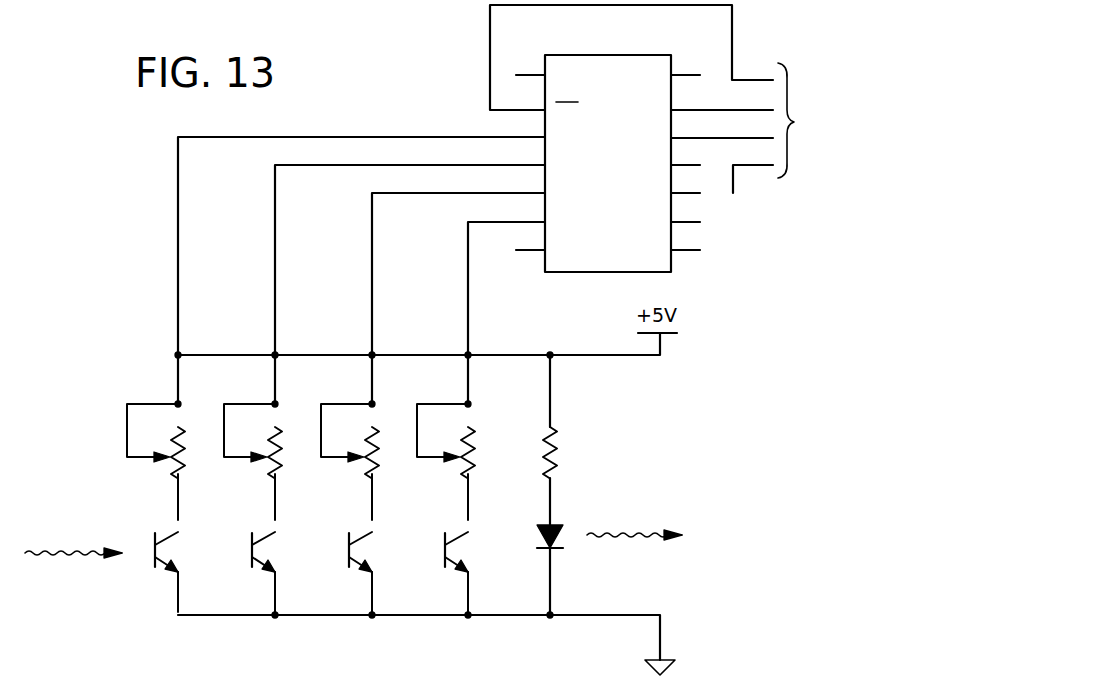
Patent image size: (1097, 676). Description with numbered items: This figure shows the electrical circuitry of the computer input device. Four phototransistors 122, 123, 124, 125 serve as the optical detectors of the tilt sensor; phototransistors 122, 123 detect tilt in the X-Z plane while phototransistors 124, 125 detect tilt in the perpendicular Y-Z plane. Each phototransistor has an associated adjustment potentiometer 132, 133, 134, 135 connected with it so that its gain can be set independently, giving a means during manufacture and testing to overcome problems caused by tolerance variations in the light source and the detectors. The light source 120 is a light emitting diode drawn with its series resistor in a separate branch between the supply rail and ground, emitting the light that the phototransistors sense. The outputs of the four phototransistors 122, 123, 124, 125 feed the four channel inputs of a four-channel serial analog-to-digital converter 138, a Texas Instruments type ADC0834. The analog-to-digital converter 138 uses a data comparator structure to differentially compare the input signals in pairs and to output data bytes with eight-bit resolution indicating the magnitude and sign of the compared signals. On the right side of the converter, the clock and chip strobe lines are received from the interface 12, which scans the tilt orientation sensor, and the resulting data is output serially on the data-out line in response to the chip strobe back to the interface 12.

The analog-to-digital converter 138 is at (615, 272).
The interface 12 is at (840, 120).
The adjustment potentiometer 132 is at (162, 468).
The adjustment potentiometer 133 is at (259, 468).
The adjustment potentiometer 134 is at (356, 468).
The adjustment potentiometer 135 is at (452, 468).
The phototransistor 122 is at (152, 569).
The phototransistor 123 is at (249, 569).
The phototransistor 124 is at (346, 569).
The phototransistor 125 is at (443, 569).
The light source 120 is at (558, 520).